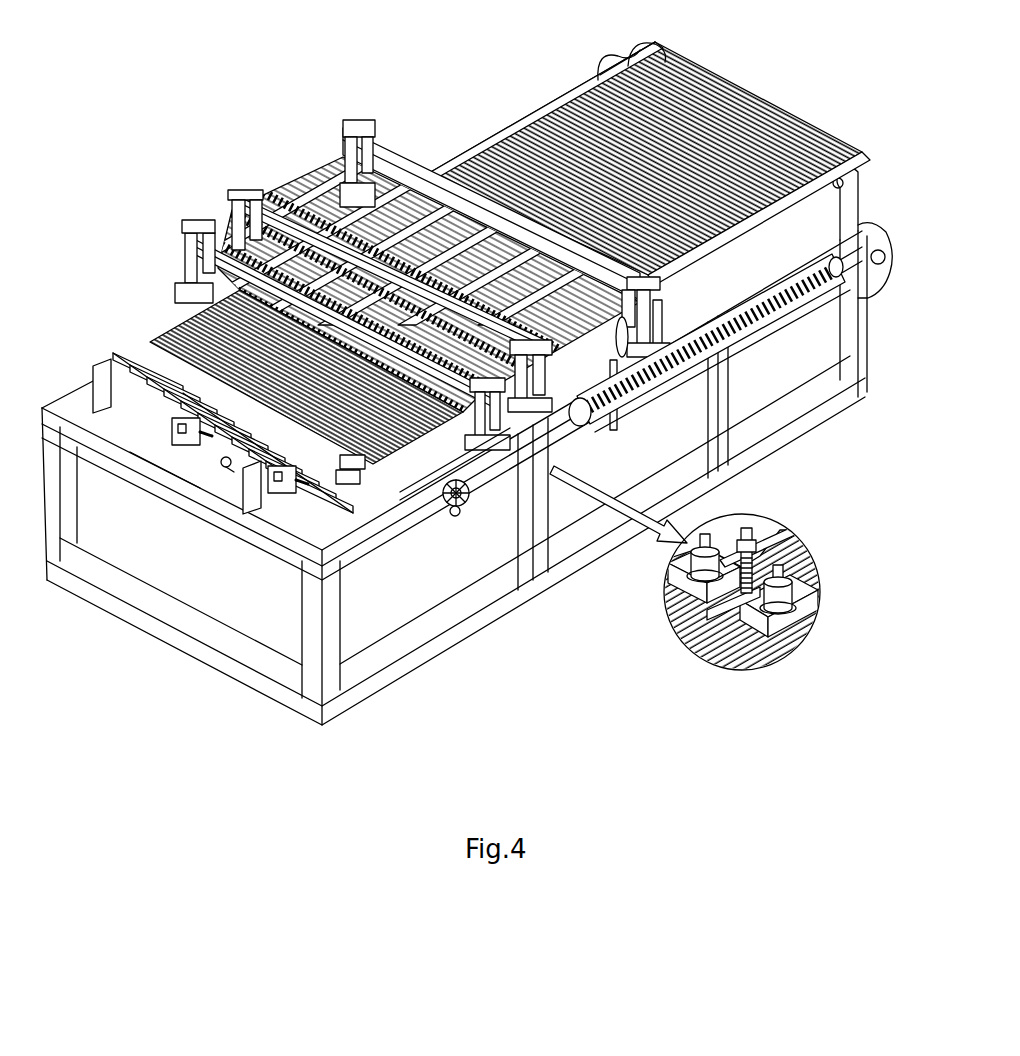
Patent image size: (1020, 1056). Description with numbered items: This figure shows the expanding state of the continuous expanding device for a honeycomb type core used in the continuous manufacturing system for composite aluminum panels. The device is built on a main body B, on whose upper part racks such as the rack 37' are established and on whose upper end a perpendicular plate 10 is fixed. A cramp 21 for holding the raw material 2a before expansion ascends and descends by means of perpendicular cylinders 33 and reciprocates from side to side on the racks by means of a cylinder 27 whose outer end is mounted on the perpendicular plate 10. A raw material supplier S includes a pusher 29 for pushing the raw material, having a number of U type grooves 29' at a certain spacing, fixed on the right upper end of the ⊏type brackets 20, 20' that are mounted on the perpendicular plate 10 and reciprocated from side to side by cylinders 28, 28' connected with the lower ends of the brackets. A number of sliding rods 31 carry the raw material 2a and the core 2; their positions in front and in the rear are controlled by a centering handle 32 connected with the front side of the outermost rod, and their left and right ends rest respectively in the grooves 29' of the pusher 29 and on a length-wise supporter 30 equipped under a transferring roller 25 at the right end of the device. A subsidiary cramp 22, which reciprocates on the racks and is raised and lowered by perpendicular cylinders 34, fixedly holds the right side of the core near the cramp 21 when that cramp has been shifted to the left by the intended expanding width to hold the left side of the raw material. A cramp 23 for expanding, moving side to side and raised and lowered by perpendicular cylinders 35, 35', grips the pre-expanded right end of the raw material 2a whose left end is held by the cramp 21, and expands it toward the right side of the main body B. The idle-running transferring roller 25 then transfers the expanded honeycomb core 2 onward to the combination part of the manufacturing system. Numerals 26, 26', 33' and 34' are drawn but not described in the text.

The core 2 is at (575, 110).
The raw material 2a is at (180, 320).
The perpendicular plate 10 is at (243, 490).
The ⊏type bracket 20 is at (113, 432).
The ⊏type bracket 20' is at (234, 538).
The cramp for holding raw material 21 is at (228, 257).
The subsidiary cramp 22 is at (272, 210).
The cramp for expanding 23 is at (390, 150).
The transferring roller 25 is at (712, 64).
The handwheel 26 is at (507, 556).
The handwheel 26' is at (442, 626).
The cylinder 27 is at (225, 466).
The cylinder 28 is at (177, 504).
The cylinder 28' is at (284, 538).
The pusher 29 is at (382, 519).
The U type grooves 29' is at (365, 548).
The length-wise supporter 30 is at (842, 176).
The sliding rods 31 is at (727, 343).
The centering handle 32 is at (453, 502).
The perpendicular cylinder 33 is at (163, 241).
The post 33' is at (497, 448).
The perpendicular cylinder 34 is at (216, 166).
The post 34' is at (558, 401).
The perpendicular cylinder 35 is at (342, 144).
The perpendicular cylinder 35' is at (659, 344).
The rack 37' is at (622, 403).
The raw material supplier S is at (148, 332).
The main body B is at (158, 483).